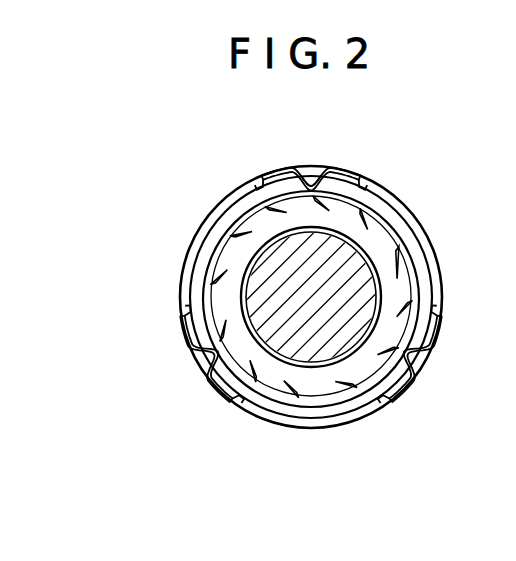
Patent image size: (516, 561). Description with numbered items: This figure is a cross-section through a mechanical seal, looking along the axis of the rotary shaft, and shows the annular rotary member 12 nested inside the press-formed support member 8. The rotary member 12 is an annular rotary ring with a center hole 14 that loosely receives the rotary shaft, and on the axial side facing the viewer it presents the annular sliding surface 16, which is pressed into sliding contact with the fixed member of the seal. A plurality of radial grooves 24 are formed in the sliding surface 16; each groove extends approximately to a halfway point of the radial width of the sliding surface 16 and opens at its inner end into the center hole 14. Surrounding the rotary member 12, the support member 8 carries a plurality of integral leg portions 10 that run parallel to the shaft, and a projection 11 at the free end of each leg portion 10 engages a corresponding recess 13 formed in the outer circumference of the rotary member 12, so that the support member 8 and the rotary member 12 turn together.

The support member 8 is at (426, 205).
The leg portion 10 is at (287, 170).
The projection 11 is at (318, 182).
The rotary member 12 is at (242, 207).
The recess 13 is at (356, 178).
The center hole 14 is at (288, 232).
The sliding surface 16 is at (216, 258).
The radial groove 24 is at (372, 222).